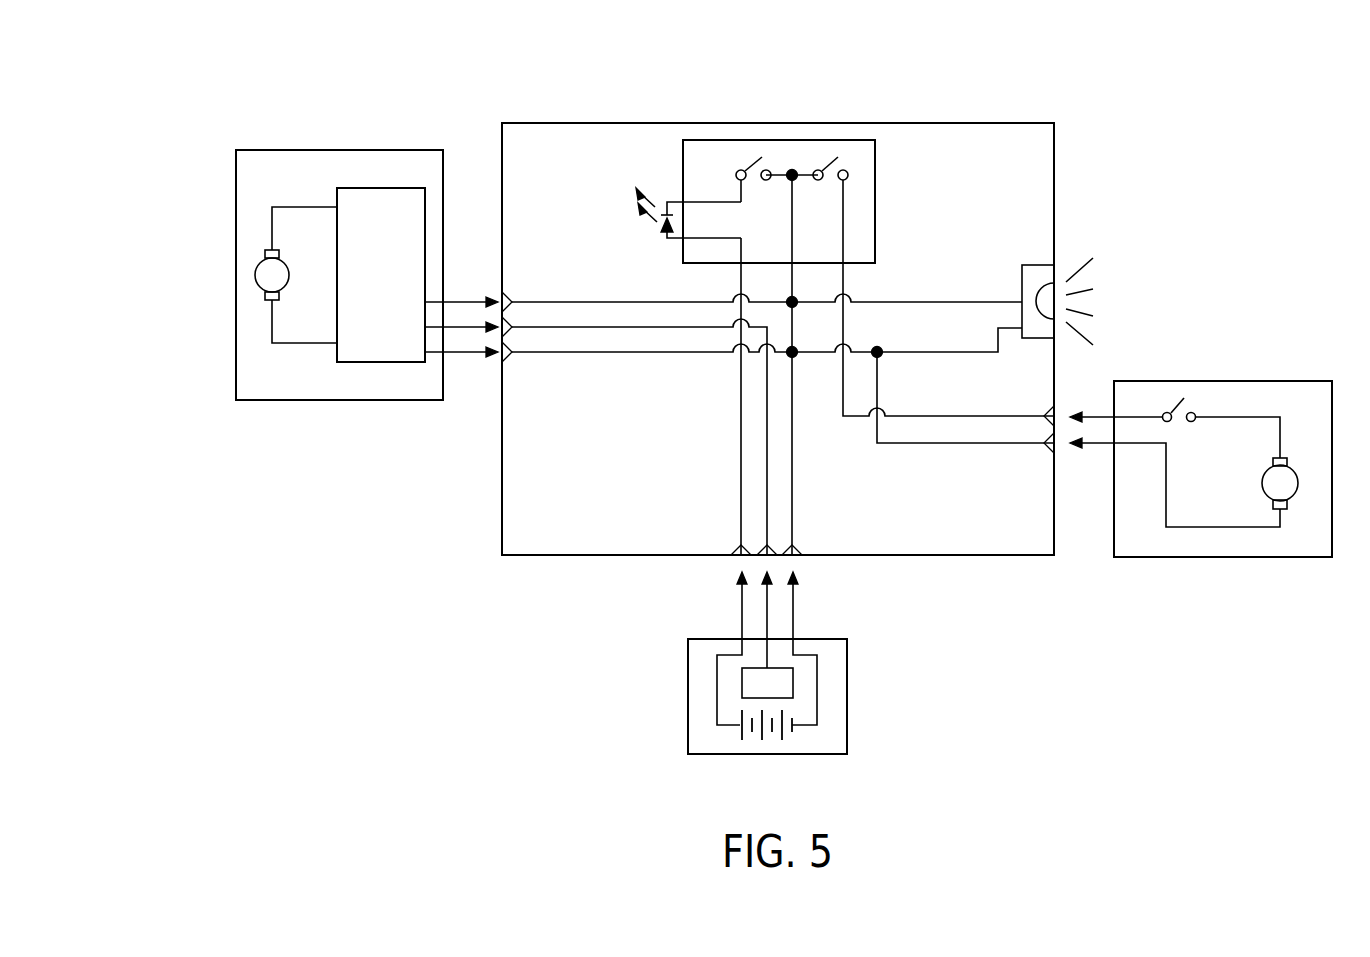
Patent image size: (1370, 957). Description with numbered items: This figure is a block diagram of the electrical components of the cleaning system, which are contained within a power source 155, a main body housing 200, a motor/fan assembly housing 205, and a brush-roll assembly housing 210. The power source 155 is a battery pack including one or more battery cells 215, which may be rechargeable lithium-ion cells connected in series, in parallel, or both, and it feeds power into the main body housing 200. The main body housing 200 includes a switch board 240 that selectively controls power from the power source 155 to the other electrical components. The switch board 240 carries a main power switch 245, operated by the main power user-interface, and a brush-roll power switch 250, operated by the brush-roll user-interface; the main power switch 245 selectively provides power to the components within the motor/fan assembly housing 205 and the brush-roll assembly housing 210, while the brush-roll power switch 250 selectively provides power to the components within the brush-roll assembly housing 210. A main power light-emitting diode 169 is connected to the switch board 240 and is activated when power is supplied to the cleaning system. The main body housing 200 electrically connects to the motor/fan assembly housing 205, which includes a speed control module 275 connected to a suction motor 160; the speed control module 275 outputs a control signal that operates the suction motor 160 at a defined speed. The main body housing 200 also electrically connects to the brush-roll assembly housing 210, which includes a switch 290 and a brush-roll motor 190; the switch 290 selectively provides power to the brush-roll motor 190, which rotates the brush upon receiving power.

The power source 155 is at (704, 754).
The suction motor 160 is at (262, 272).
The main power light-emitting diode 169 is at (653, 178).
The brush-roll motor 190 is at (1290, 480).
The main body housing 200 is at (592, 504).
The motor/fan assembly housing 205 is at (306, 388).
The brush-roll assembly housing 210 is at (1325, 556).
The battery cells 215 is at (790, 758).
The switch board 240 is at (876, 183).
The main power switch 245 is at (729, 158).
The brush-roll power switch 250 is at (845, 158).
The speed control module 275 is at (400, 285).
The switch 290 is at (1194, 404).